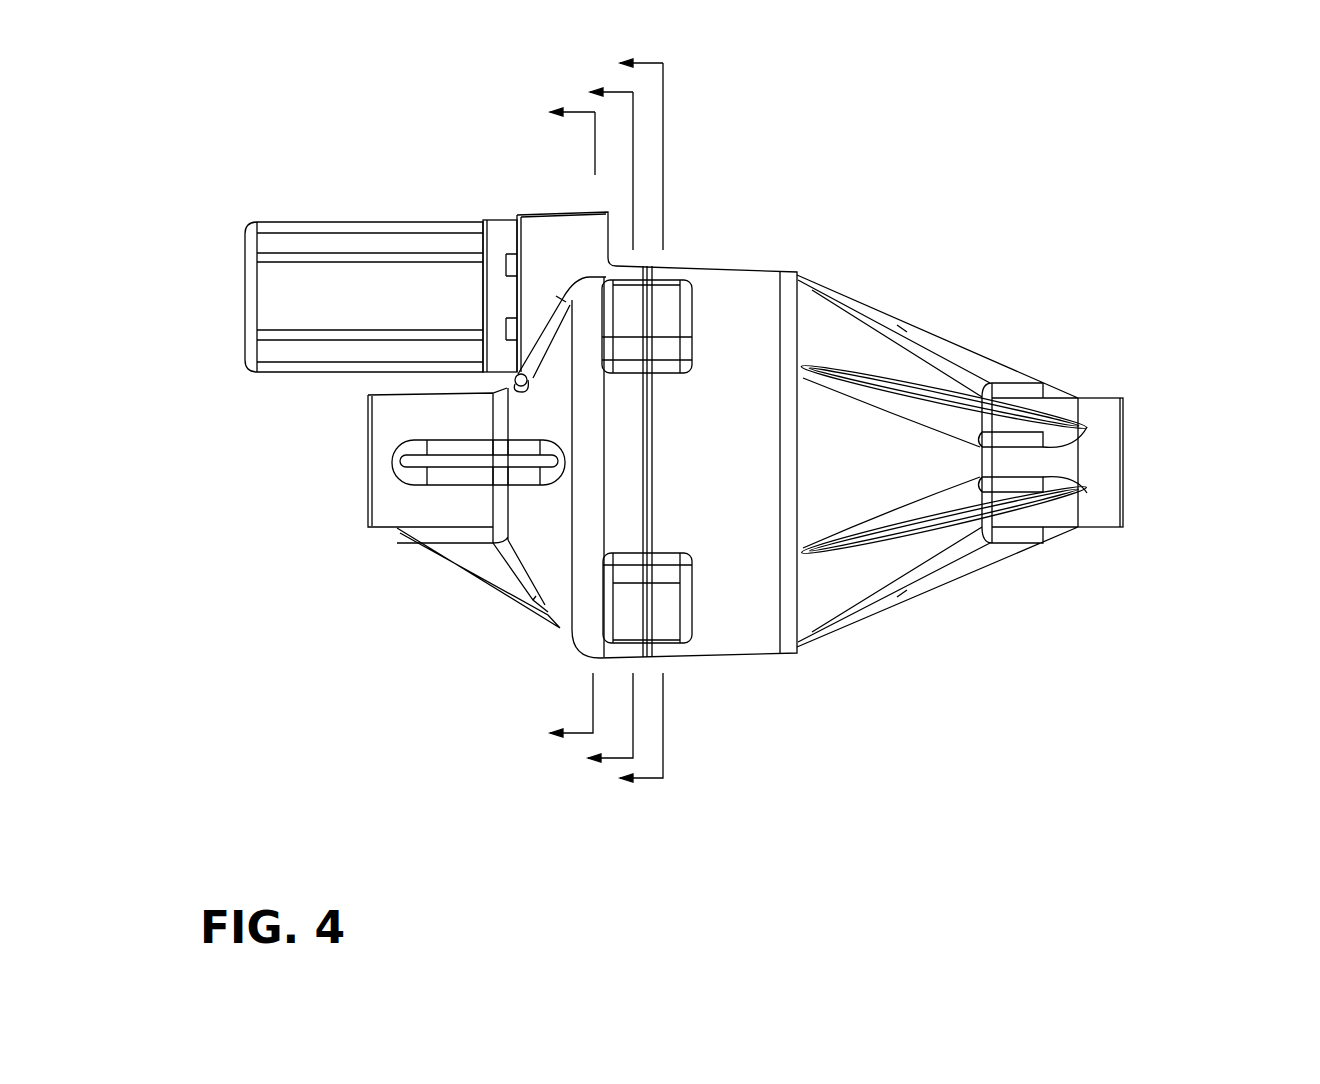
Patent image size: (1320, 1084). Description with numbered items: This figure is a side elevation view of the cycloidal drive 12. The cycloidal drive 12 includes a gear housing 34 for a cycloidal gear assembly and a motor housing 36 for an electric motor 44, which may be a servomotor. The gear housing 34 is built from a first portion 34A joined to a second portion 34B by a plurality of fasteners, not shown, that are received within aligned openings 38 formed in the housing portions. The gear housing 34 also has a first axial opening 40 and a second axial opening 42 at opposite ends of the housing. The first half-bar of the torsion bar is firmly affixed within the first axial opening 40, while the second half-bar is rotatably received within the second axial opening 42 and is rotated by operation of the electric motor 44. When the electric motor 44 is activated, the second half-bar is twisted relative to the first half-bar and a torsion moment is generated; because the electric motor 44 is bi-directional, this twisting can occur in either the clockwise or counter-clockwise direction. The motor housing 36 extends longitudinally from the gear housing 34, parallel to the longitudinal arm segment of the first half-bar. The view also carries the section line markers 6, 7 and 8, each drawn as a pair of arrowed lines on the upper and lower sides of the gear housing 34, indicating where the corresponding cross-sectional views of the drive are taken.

The cycloidal drive 12 is at (702, 466).
The gear housing 34 is at (778, 526).
The first portion 34A is at (557, 598).
The second portion 34B is at (795, 273).
The motor housing 36 is at (386, 261).
The aligned openings 38 is at (680, 300).
The first axial opening 40 is at (362, 520).
The second axial opening 42 is at (1127, 488).
The electric motor 44 is at (283, 302).
The section line 6- 6 is at (560, 425).
The section line 7- 7 is at (600, 425).
The section line 8- 8 is at (630, 422).